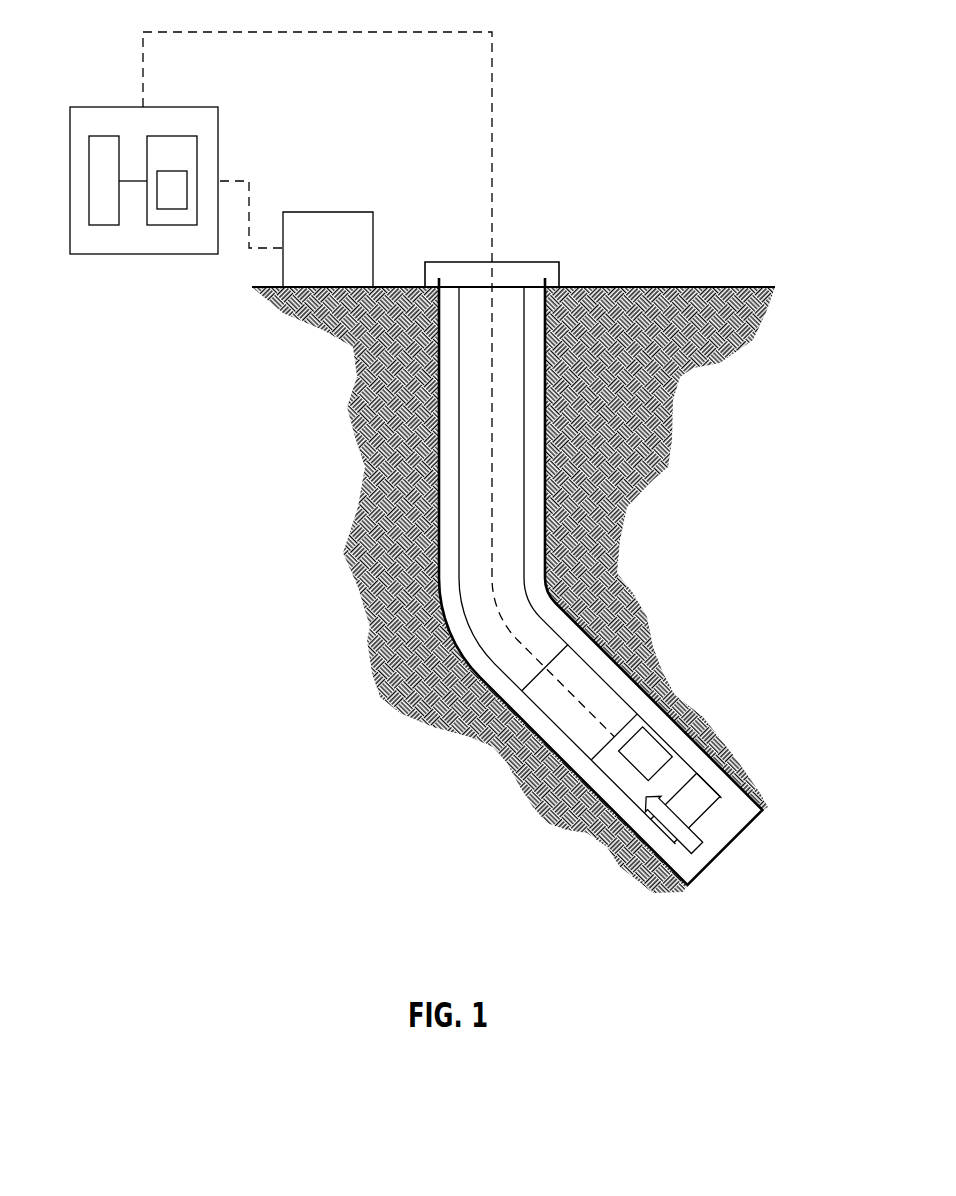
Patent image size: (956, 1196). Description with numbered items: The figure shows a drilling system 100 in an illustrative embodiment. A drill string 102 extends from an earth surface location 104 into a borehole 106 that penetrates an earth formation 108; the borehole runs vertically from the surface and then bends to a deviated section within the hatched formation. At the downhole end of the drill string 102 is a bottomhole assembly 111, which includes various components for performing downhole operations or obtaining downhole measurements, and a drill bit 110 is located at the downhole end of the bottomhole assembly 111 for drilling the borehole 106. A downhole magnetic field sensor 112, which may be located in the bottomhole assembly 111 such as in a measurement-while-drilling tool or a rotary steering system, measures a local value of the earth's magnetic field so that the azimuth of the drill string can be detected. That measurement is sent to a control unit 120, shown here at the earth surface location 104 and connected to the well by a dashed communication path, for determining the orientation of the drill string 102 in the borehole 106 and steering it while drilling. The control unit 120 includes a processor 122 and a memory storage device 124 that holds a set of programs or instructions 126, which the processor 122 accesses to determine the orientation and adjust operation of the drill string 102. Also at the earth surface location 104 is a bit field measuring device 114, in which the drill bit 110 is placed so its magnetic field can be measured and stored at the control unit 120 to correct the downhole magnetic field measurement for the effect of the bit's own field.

The drilling system 100 is at (762, 153).
The drill string 102 is at (525, 450).
The earth surface location 104 is at (713, 287).
The borehole 106 is at (545, 383).
The earth formation 108 is at (720, 605).
The drill bit 110 is at (627, 866).
The bottomhole assembly 111 is at (535, 680).
The downhole magnetic field sensor 112 is at (650, 750).
The bit field measuring device 114 is at (328, 212).
The control unit 120 is at (107, 254).
The processor 122 is at (105, 135).
The memory storage device 124 is at (172, 135).
The set of programs or instructions 126 is at (188, 185).